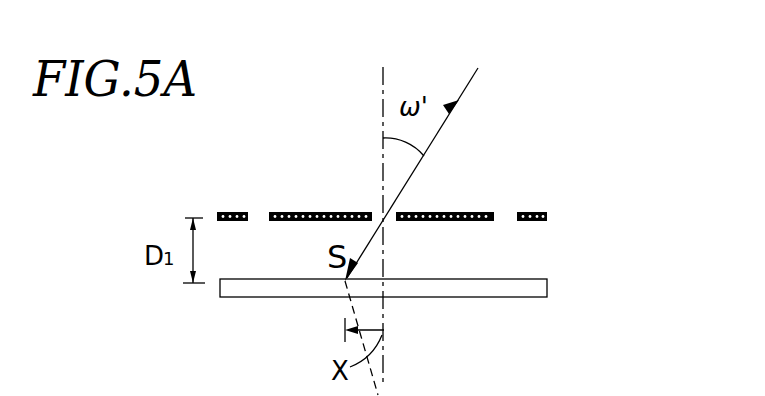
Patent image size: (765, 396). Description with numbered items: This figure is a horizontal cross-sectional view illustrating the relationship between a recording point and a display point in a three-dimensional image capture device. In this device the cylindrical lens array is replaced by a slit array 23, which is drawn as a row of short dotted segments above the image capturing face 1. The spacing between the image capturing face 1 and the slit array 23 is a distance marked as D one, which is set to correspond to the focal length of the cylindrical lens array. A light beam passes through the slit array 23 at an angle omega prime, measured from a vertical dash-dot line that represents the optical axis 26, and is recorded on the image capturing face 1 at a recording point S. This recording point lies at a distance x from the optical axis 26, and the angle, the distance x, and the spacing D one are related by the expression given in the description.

The image capturing face 1 is at (548, 283).
The slit array 23 is at (535, 212).
The optical axis 26 is at (379, 207).